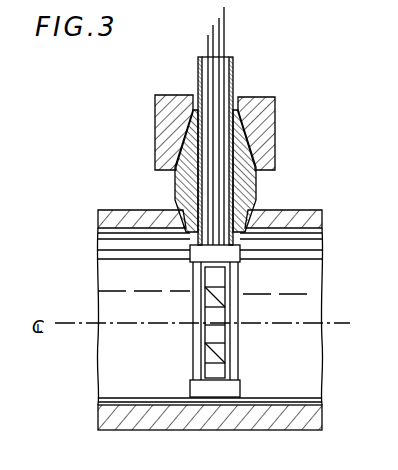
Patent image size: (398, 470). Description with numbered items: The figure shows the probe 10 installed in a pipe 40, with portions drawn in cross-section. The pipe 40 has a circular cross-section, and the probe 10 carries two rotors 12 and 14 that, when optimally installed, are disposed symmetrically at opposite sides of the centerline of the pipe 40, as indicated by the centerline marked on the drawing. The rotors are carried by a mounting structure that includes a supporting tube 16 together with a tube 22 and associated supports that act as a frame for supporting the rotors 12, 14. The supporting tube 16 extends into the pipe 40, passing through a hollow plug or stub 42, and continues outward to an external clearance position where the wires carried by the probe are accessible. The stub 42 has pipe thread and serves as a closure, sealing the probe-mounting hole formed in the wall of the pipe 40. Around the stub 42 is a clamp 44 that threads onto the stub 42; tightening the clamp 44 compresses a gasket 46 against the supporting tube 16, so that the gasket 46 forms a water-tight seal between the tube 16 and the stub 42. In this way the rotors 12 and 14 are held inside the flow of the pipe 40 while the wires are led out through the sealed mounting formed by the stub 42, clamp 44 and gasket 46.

The probe 10 is at (189, 352).
The rotor 12 is at (200, 310).
The rotor 14 is at (240, 368).
The supporting tube 16 is at (233, 65).
The tube 22 is at (229, 26).
The pipe 40 is at (125, 210).
The hollow plug or stub 42 is at (257, 186).
The clamp 44 is at (160, 132).
The gasket 46 is at (275, 110).